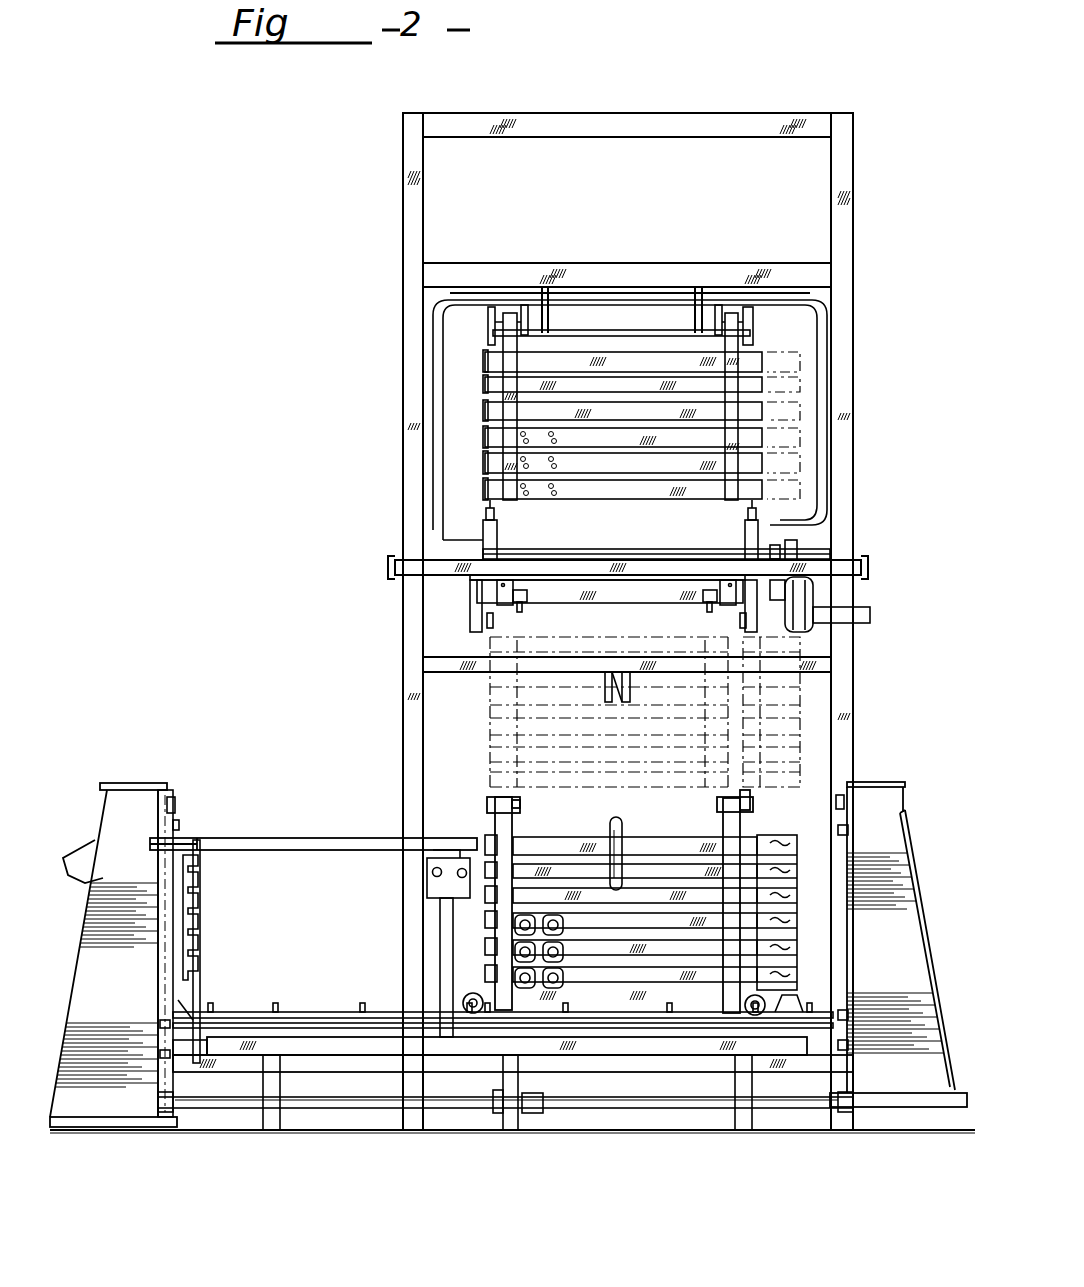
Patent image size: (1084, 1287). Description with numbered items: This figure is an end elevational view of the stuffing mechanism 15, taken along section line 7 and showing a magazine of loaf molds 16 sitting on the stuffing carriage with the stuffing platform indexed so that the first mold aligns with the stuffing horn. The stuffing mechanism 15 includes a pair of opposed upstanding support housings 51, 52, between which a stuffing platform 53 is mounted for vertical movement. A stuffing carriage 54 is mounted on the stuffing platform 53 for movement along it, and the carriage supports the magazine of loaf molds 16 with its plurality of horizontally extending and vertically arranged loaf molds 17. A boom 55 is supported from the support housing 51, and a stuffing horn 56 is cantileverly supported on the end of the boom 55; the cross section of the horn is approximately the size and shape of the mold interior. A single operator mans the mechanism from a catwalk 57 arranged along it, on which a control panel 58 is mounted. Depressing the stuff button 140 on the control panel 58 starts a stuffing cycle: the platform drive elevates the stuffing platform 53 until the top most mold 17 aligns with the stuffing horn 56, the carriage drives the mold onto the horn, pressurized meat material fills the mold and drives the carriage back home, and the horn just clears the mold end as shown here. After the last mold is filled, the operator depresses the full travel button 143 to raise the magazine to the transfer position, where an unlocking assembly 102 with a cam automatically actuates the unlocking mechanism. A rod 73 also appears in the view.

The section line 7- 7 is at (118, 770).
The stuffing mechanism 15 is at (898, 915).
The magazine of loaf molds 16 is at (755, 839).
The loaf molds 17 is at (568, 866).
The support housing 51 is at (122, 906).
The support housing 52 is at (890, 853).
The stuffing platform 53 is at (799, 1057).
The stuffing carriage 54 is at (733, 850).
The boom 55 is at (296, 838).
The stuffing horn 56 is at (467, 840).
The catwalk 57 is at (653, 1052).
The control panel 58 is at (412, 943).
The drive rod 73 is at (333, 1102).
The unlocking assembly 102 is at (636, 682).
The stuff button 140 is at (433, 870).
The full travel button 143 is at (460, 878).